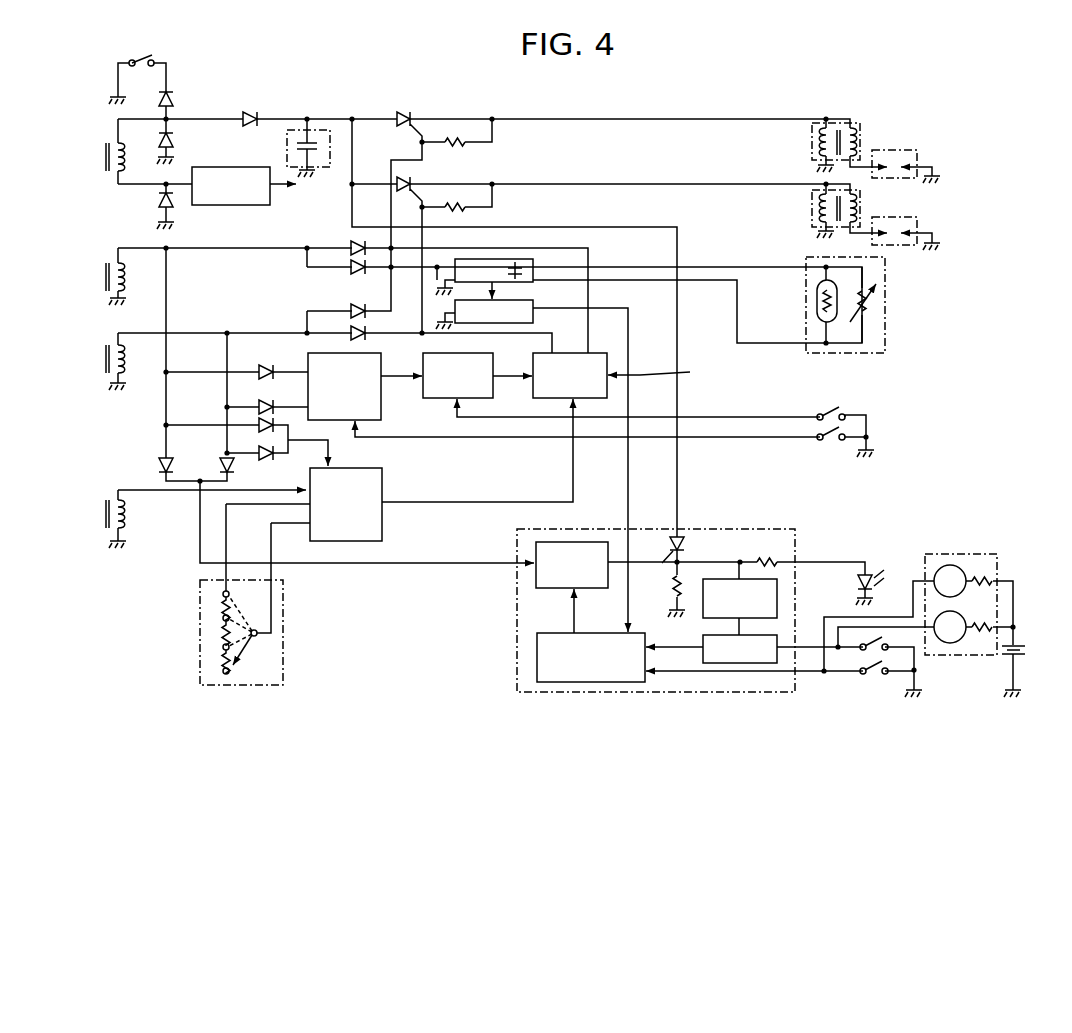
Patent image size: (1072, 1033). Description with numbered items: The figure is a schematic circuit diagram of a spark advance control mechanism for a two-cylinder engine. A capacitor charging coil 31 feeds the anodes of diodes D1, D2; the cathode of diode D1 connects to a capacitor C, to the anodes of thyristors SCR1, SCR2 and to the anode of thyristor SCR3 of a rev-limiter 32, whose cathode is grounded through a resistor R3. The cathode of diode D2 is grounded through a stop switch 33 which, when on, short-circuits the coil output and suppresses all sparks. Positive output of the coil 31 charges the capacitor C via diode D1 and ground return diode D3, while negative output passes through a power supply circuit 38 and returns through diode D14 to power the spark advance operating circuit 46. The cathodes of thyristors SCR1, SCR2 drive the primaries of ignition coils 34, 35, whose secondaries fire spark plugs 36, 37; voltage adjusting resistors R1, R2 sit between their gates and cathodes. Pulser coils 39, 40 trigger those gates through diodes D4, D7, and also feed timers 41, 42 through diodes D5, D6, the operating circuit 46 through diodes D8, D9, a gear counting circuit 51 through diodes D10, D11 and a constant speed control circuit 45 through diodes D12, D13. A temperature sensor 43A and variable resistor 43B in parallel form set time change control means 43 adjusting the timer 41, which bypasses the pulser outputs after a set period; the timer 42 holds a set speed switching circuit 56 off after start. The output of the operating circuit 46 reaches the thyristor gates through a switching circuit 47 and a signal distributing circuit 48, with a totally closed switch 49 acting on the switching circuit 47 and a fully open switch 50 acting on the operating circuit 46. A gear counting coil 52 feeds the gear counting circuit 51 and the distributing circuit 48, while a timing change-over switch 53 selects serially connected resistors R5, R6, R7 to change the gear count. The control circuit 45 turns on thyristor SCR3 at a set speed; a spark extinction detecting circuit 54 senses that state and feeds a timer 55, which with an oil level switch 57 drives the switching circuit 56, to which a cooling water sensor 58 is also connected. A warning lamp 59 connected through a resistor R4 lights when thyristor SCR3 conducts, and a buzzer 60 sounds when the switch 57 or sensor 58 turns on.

The capacitor charging coil 31 is at (117, 170).
The rev-limiter 32 is at (517, 677).
The stop switch 33 is at (140, 58).
The ignition coil 34 is at (812, 145).
The ignition coil 35 is at (812, 212).
The spark plug 36 is at (905, 150).
The spark plug 37 is at (905, 217).
The power supply circuit 38 is at (238, 205).
The pulser coil 39 is at (118, 295).
The pulser coil 40 is at (118, 378).
The timer 41 is at (540, 240).
The timer 42 is at (525, 301).
The set time change control means 43 is at (850, 313).
The temperature sensor 43A is at (817, 301).
The variable resistor 43B is at (878, 301).
The constant speed control circuit 45 is at (495, 583).
The spark advance operating circuit 46 is at (381, 414).
The switching circuit 47 is at (485, 398).
The signal distributing circuit 48 is at (595, 353).
The totally closed switch 49 is at (835, 412).
The fully open switch 50 is at (836, 448).
The gear counting circuit 51 is at (382, 476).
The gear counting coil 52 is at (118, 533).
The timing change-over switch 53 is at (246, 597).
The spark extinction detecting circuit 54 is at (720, 579).
The timer 55 is at (733, 663).
The set speed switching circuit 56 is at (597, 682).
The oil level switch 57 is at (858, 672).
The cooling water sensor 58 is at (877, 675).
The warning lamp 59 is at (858, 581).
The buzzer 60 is at (905, 545).
The capacitor C is at (315, 130).
The diode D1 is at (250, 111).
The diode D2 is at (173, 98).
The diode D3 is at (159, 201).
The diode D4 is at (368, 241).
The diode D5 is at (368, 260).
The diode D6 is at (355, 306).
The diode D7 is at (358, 328).
The diode D8 is at (264, 366).
The diode D9 is at (264, 401).
The diode D10 is at (262, 431).
The diode D11 is at (262, 459).
The diode D12 is at (159, 462).
The diode D13 is at (220, 464).
The diode D14 is at (175, 140).
The voltage adjusting resistor R1 is at (455, 141).
The voltage adjusting resistor R2 is at (458, 206).
The resistor R3 is at (677, 586).
The resistor R4 is at (767, 562).
The resistor R5 is at (224, 600).
The resistor R6 is at (224, 630).
The resistor R7 is at (195, 670).
The thyristor SCR1 is at (403, 112).
The thyristor SCR2 is at (412, 177).
The thyristor SCR3 is at (688, 536).